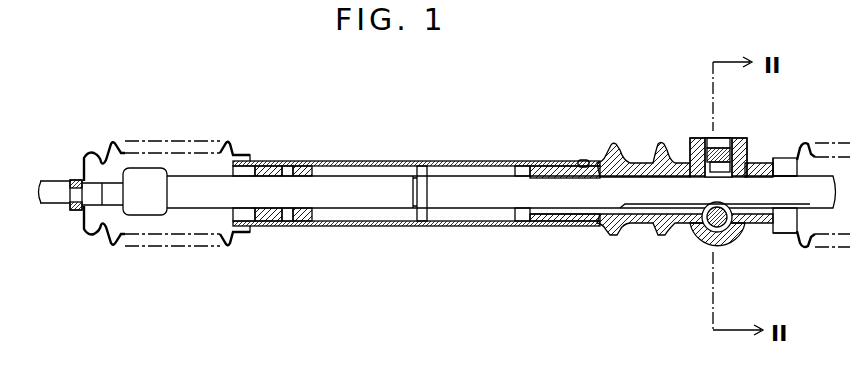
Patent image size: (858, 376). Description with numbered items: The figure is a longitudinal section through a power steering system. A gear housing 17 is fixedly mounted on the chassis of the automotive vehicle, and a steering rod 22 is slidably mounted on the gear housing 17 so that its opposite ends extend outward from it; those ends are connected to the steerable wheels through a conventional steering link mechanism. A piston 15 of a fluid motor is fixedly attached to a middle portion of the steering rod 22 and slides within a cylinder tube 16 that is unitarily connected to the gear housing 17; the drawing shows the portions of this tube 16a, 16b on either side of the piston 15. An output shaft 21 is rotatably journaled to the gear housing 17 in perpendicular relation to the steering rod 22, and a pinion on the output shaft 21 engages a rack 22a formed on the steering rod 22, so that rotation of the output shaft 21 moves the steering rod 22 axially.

The piston 15 is at (424, 166).
The cylinder tube 16 is at (392, 161).
The left cylinder portion 16a is at (383, 217).
The right cylinder portion 16b is at (488, 217).
The gear housing 17 is at (635, 222).
The output shaft 21 is at (735, 240).
The steering rod 22 is at (460, 209).
The rack 22a is at (677, 205).